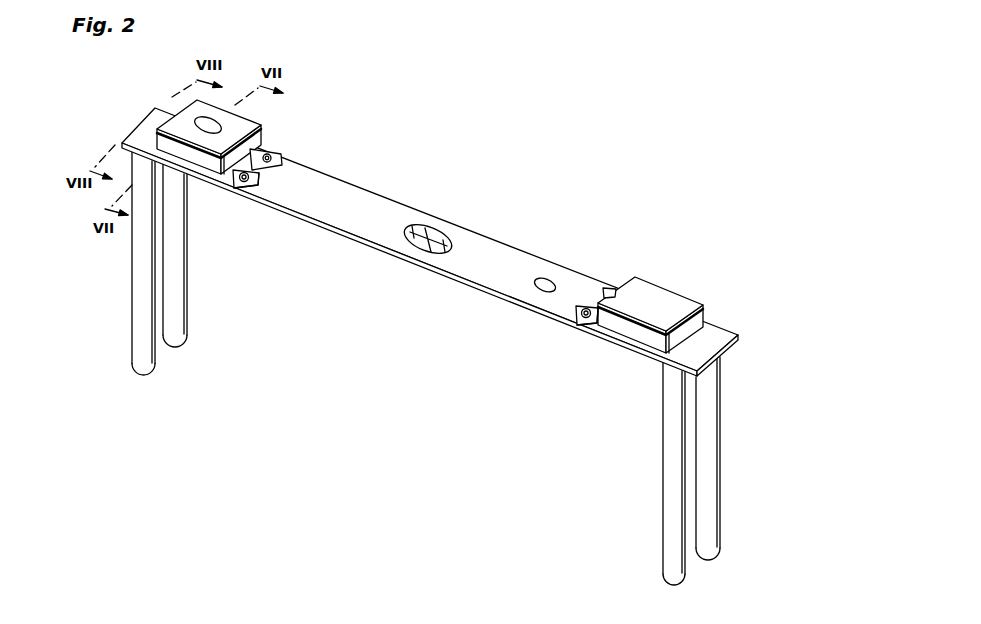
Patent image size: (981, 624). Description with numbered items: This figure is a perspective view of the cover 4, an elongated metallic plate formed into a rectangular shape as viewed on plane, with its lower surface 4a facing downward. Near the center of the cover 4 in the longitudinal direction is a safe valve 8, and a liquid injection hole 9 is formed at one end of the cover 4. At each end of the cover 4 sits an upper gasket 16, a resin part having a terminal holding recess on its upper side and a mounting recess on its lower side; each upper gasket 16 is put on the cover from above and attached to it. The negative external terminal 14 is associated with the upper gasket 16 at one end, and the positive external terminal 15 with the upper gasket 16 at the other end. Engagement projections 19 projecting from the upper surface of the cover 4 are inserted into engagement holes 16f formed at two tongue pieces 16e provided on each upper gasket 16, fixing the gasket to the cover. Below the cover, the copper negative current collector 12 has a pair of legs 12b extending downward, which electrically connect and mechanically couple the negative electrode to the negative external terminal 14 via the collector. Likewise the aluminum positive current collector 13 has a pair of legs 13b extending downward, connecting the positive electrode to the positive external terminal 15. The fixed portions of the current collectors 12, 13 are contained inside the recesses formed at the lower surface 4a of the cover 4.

The cover 4 is at (556, 246).
The lower surface 4a is at (497, 278).
The safe valve 8 is at (432, 230).
The liquid injection hole 9 is at (548, 282).
The negative current collector 12 is at (130, 325).
The legs 12b is at (140, 358).
The positive current collector 13 is at (724, 453).
The legs 13b is at (672, 517).
The negative external terminal 14 is at (250, 114).
The positive external terminal 15 is at (688, 281).
The upper gasket 16 is at (159, 144).
The tongue pieces 16e is at (251, 188).
The engagement holes 16f is at (258, 180).
The engagement projections 19 is at (242, 182).